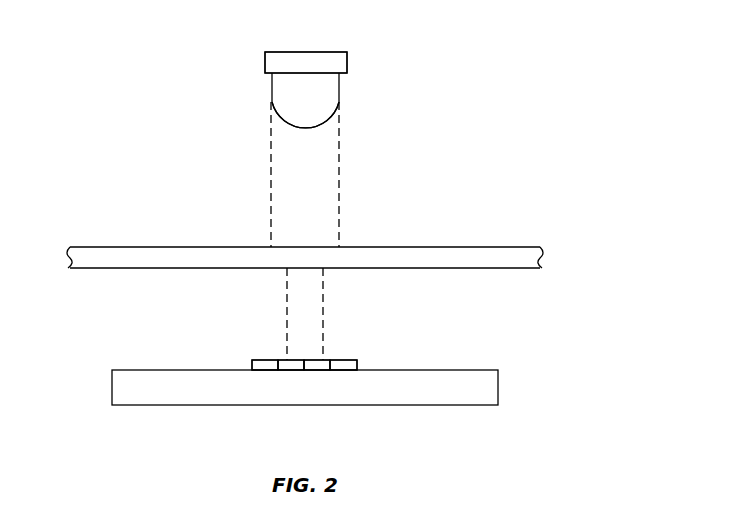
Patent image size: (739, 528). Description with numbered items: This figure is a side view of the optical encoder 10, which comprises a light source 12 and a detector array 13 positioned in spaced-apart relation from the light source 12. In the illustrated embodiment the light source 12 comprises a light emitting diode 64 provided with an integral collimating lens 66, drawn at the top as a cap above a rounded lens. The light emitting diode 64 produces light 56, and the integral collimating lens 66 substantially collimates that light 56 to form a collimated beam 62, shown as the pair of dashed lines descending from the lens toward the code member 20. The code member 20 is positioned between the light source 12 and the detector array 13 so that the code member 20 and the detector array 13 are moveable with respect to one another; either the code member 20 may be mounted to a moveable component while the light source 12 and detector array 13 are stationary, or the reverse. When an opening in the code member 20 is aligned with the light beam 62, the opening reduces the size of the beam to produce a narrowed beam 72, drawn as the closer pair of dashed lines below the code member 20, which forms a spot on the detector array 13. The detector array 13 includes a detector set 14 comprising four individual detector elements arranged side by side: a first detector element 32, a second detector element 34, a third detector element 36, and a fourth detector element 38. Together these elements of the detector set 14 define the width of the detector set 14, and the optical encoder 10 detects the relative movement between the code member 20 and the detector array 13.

The optical encoder 10 is at (131, 51).
The light source 12 is at (345, 46).
The light emitting diode 64 is at (280, 52).
The integral collimating lens 66 is at (279, 116).
The light 56 is at (347, 152).
The light beam 62 is at (270, 190).
The code member 20 is at (509, 241).
The narrowed beam 72 is at (332, 292).
The detector array 13 is at (262, 341).
The detector set 14 is at (360, 350).
The first detector element 32 is at (262, 358).
The second detector element 34 is at (292, 370).
The third detector element 36 is at (315, 370).
The fourth detector element 38 is at (345, 370).